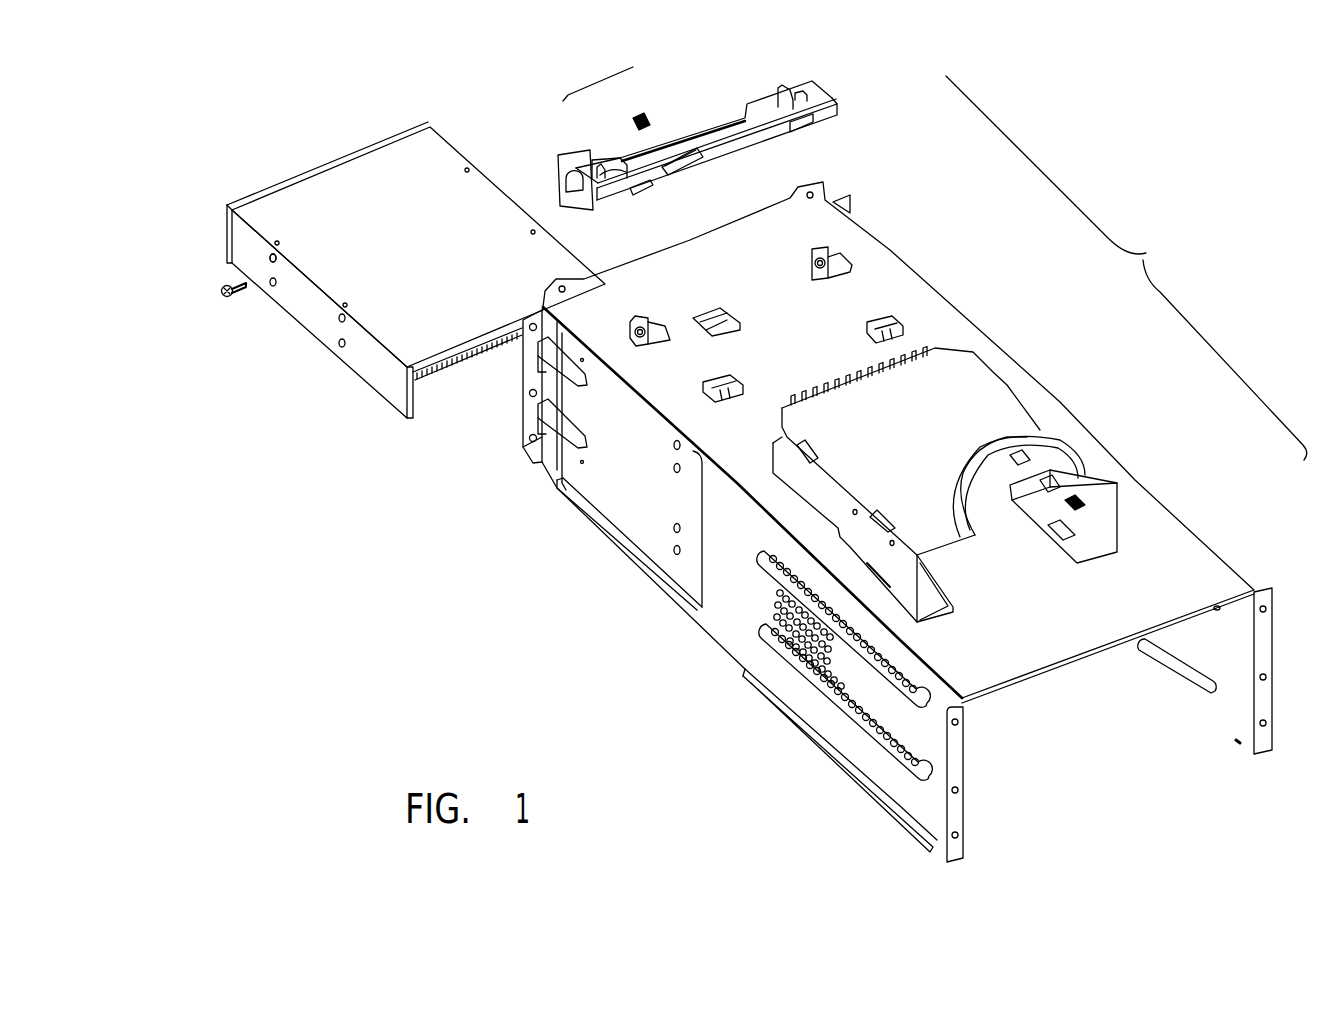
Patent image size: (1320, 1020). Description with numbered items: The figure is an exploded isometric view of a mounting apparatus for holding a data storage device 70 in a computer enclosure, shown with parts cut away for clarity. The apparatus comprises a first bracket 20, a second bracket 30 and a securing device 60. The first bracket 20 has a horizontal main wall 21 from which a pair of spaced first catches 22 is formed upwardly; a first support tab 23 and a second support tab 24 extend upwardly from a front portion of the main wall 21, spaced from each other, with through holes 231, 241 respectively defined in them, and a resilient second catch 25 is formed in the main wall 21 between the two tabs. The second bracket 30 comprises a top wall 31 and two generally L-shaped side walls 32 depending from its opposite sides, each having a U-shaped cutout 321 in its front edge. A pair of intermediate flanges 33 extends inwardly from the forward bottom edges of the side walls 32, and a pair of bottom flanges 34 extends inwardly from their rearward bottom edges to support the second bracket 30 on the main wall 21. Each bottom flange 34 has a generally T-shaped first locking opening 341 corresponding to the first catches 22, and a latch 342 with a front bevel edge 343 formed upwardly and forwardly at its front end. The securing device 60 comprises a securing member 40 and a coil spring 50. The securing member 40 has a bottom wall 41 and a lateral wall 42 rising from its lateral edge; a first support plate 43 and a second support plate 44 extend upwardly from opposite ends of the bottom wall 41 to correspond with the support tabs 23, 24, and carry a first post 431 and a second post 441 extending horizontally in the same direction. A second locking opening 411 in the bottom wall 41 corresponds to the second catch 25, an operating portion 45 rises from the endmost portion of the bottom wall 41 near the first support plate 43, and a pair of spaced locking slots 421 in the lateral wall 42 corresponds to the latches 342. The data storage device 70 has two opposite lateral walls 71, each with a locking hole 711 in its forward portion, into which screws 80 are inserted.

The first bracket 20 is at (872, 469).
The main wall 21 is at (1040, 620).
The first catches 22 is at (740, 383).
The first support tab 23 is at (634, 328).
The through hole 231 is at (640, 340).
The second support tab 24 is at (813, 247).
The through hole 241 is at (828, 276).
The second catch 25 is at (708, 307).
The second bracket 30 is at (1002, 475).
The top wall 31 is at (1003, 398).
The side walls 32 is at (900, 570).
The U-shaped cutouts 321 is at (777, 452).
The intermediate flanges 33 is at (1012, 455).
The bottom flanges 34 is at (1093, 545).
The first locking opening 341 is at (1083, 500).
The latch 342 is at (1058, 482).
The front bevel edge 343 is at (1015, 457).
The securing member 40 is at (699, 149).
The bottom wall 41 is at (763, 115).
The second locking opening 411 is at (693, 160).
The lateral wall 42 is at (723, 155).
The locking slots 421 is at (637, 196).
The first support plate 43 is at (605, 172).
The first post 431 is at (602, 167).
The second support plate 44 is at (782, 95).
The second post 441 is at (810, 94).
The operating portion 45 is at (560, 172).
The coil spring 50 is at (637, 117).
The securing device 60 is at (598, 76).
The data storage device 70 is at (318, 158).
The lateral walls 71 is at (307, 327).
The locking hole 711 is at (268, 259).
The screws 80 is at (230, 305).